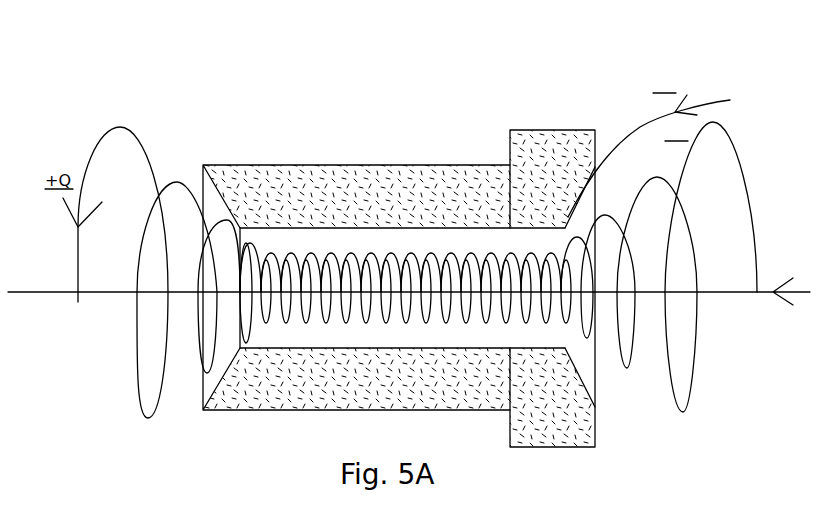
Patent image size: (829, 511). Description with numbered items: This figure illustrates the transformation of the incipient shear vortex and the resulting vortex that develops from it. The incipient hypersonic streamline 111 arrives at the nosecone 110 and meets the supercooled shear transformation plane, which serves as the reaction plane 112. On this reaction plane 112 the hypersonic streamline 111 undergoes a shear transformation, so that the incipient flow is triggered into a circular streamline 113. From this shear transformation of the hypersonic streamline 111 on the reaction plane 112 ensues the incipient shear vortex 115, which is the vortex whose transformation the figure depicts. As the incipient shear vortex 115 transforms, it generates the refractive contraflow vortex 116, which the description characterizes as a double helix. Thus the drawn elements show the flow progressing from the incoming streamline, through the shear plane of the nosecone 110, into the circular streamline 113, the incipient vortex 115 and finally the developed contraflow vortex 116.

The nosecone 110 is at (543, 130).
The hypersonic streamline 111 is at (677, 111).
The reaction plane 112 is at (573, 150).
The circular streamline 113 is at (600, 287).
The incipient shear vortex 115 is at (212, 178).
The refractive contraflow vortex 116 is at (270, 228).